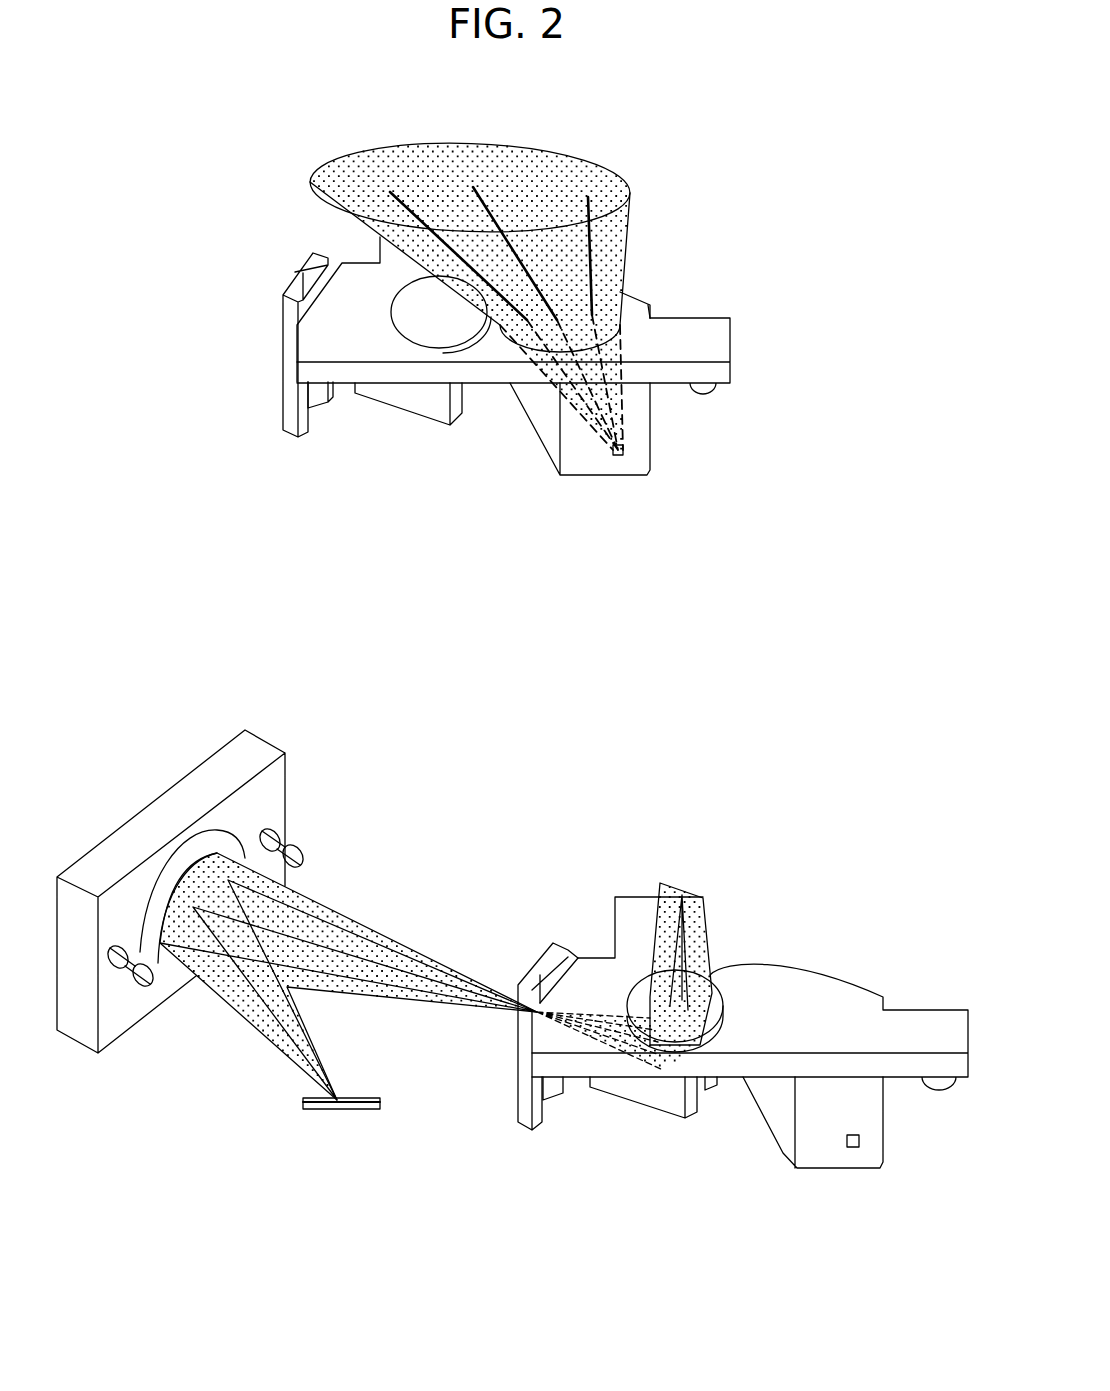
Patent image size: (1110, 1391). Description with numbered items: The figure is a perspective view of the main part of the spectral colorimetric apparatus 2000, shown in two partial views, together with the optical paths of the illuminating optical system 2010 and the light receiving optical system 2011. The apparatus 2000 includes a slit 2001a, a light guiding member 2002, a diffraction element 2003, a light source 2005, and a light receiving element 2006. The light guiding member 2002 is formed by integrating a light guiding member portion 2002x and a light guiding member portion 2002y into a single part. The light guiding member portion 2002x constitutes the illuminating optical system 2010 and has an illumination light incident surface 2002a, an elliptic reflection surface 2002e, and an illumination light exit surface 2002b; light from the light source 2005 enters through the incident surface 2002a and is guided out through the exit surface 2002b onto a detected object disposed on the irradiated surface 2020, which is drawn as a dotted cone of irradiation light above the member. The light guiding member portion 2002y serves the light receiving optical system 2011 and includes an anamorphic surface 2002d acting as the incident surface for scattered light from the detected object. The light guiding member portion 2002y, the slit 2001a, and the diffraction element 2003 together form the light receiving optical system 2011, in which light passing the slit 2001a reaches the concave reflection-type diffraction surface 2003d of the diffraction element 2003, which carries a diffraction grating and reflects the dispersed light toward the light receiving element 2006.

The spectral colorimetric apparatus 2000 is at (679, 102).
The irradiated surface 2020 is at (460, 158).
The illuminating optical system 2010 is at (613, 242).
The light guiding member 2002 is at (710, 337).
The illumination light incident surface 2002a is at (612, 410).
The illumination light exit surface 2002b is at (640, 297).
The anamorphic surface 2002d is at (402, 297).
The elliptic reflection surface 2002e is at (655, 308).
The light guiding member portion 2002x is at (545, 433).
The light guiding member portion 2002y is at (440, 413).
The slit 2001a is at (290, 422).
The light source 2005 is at (627, 451).
The diffraction element 2003 is at (270, 785).
The concave reflection-type diffraction surface 2003d is at (160, 980).
The light receiving optical system 2011 is at (340, 920).
The light receiving element 2006 is at (330, 1113).